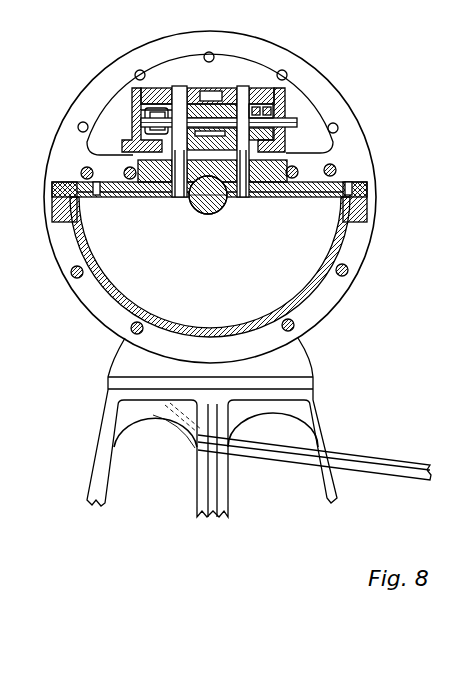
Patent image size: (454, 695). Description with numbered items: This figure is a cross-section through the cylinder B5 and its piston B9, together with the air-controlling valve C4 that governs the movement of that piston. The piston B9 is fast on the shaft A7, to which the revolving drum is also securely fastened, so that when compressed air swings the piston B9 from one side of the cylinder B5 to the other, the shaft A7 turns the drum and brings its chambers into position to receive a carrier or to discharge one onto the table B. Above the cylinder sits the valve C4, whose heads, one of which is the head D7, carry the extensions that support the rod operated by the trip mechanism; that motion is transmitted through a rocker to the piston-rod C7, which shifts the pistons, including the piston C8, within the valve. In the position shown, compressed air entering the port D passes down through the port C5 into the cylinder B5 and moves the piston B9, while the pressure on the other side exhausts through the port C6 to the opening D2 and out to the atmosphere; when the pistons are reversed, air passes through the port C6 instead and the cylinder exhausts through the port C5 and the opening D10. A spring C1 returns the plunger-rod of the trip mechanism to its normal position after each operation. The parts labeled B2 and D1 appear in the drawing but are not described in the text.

The shaft A7 is at (197, 214).
The table B is at (412, 464).
The stand B2 is at (193, 497).
The cylinder B5 is at (208, 215).
The piston B9 is at (305, 200).
The spring C1 is at (176, 100).
The air-controlling valve C4 is at (245, 87).
The port C5 is at (175, 197).
The port C6 is at (244, 197).
The piston-rod C7 is at (293, 118).
The piston C8 is at (230, 100).
The port D is at (210, 102).
The wall D1 is at (132, 142).
The opening D2 is at (288, 90).
The head D7 is at (287, 143).
The opening D10 is at (150, 121).